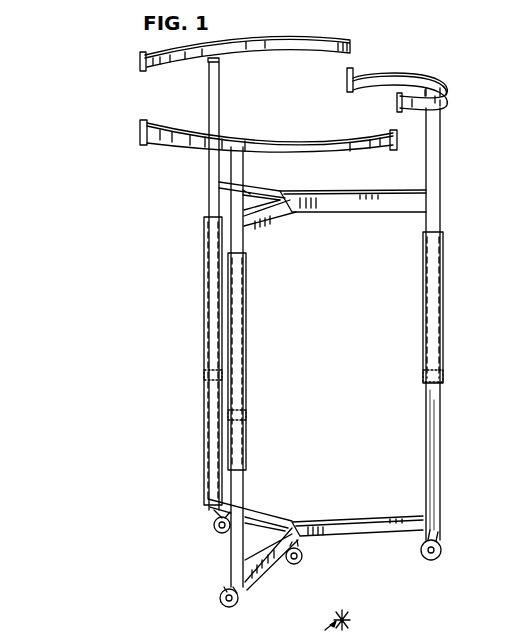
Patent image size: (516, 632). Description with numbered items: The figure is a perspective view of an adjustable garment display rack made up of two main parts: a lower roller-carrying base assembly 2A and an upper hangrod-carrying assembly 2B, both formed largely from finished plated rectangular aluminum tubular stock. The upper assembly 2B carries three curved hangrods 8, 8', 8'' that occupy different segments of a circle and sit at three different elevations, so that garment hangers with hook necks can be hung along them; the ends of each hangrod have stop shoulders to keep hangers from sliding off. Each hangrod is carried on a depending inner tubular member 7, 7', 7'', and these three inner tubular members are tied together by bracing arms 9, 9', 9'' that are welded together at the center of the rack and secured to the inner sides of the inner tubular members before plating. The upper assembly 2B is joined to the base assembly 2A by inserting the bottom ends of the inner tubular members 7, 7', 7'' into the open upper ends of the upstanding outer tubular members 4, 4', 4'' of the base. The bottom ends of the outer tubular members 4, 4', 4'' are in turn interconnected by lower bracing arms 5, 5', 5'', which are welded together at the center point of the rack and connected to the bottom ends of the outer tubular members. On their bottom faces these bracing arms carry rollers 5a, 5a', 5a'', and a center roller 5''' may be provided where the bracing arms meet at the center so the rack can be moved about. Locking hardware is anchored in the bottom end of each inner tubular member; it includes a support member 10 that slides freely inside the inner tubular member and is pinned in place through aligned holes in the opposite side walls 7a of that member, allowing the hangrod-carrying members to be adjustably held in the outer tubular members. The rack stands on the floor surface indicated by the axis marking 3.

The lower roller-carrying base assembly 2A is at (202, 433).
The upper hangrod-carrying assembly 2B is at (347, 34).
The vertical axis 3 is at (348, 615).
The outer tubular member 4 is at (461, 381).
The outer tubular member 4' is at (268, 361).
The outer tubular member 4'' is at (177, 361).
The bracing arm 5 is at (357, 505).
The bracing arm 5' is at (276, 565).
The bracing arm 5'' is at (264, 494).
The center roller 5''' is at (334, 558).
The roller 5a is at (466, 545).
The roller 5a' is at (185, 609).
The roller 5a'' is at (176, 528).
The inner tubular member 7 is at (458, 314).
The inner tubular member 7' is at (194, 367).
The inner tubular member 7'' is at (254, 284).
The side wall 7a is at (506, 403).
The curved hangrod 8 is at (397, 76).
The curved hangrod 8' is at (268, 122).
The curved hangrod 8'' is at (245, 37).
The bracing arm 9 is at (353, 227).
The bracing arm 9' is at (283, 232).
The bracing arm 9'' is at (286, 182).
The support member 10 is at (203, 374).